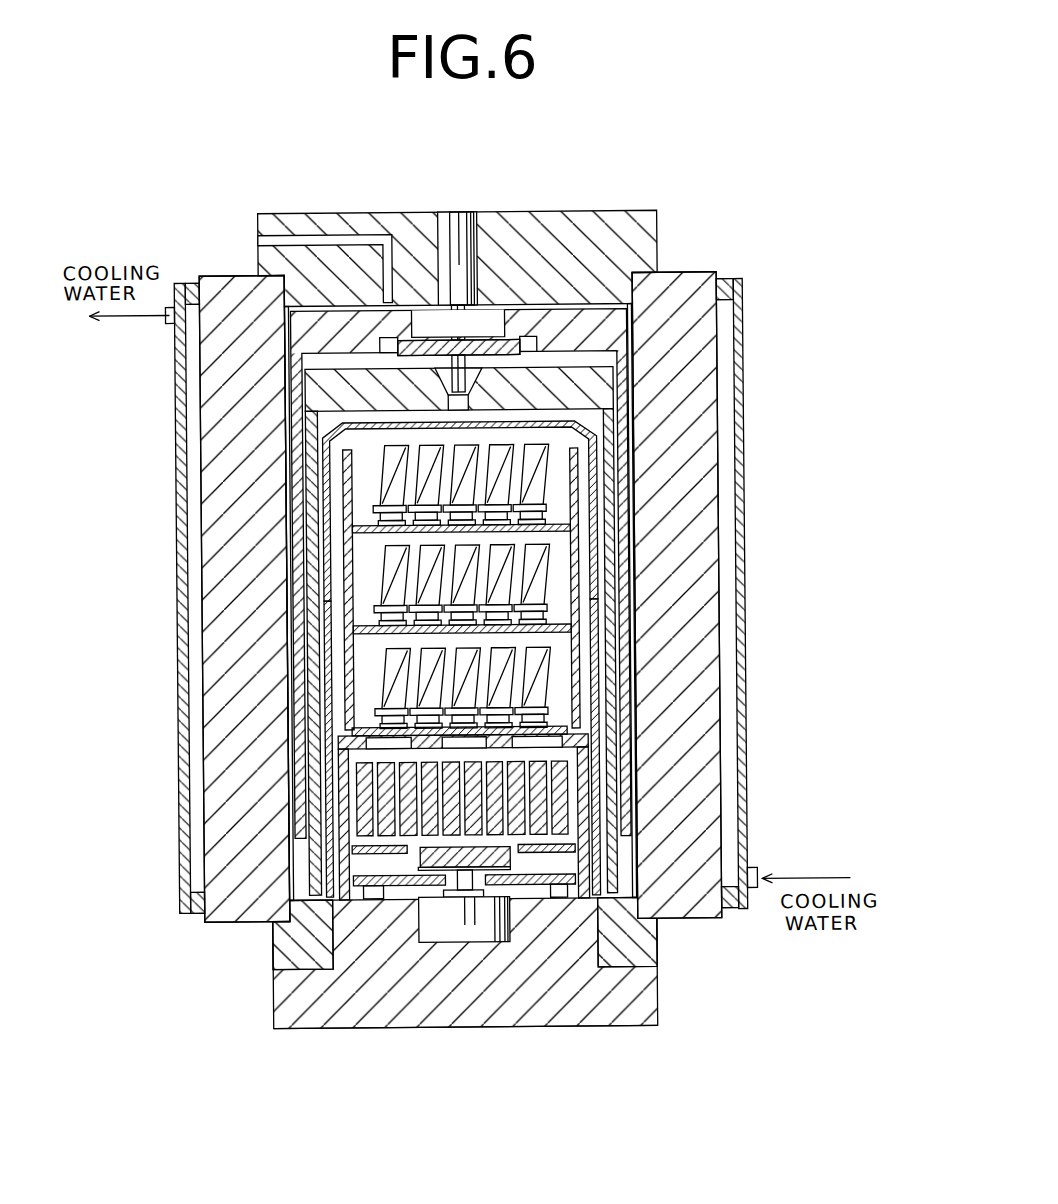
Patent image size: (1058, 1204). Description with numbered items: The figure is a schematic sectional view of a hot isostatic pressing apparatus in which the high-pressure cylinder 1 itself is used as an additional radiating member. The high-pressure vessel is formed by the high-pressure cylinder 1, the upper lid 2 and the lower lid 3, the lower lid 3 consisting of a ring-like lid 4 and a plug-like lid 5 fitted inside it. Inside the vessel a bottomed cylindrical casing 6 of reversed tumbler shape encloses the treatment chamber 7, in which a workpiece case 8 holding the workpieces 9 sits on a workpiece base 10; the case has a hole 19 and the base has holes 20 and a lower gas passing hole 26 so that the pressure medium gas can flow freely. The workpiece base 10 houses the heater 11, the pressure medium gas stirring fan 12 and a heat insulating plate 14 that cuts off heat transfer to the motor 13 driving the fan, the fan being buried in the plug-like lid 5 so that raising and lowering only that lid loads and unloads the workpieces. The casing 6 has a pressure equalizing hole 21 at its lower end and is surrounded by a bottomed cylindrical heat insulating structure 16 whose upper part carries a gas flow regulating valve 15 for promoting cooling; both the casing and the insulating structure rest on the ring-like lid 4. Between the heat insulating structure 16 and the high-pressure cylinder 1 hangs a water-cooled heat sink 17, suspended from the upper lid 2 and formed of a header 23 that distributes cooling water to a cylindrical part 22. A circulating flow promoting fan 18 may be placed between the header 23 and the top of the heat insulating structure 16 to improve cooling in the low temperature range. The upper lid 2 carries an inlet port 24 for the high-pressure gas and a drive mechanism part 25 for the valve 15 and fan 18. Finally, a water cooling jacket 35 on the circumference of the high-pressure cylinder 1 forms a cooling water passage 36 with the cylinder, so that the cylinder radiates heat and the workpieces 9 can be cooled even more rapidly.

The high-pressure cylinder 1 is at (507, 557).
The upper lid 2 is at (466, 235).
The lower lid 3 is at (665, 985).
The ring-like lid 4 is at (629, 958).
The plug-like lid 5 is at (624, 1011).
The bottomed cylindrical casing 6 is at (601, 508).
The treatment chamber 7 is at (459, 563).
The workpiece case 8 is at (580, 646).
The workpieces 9 is at (548, 573).
The workpiece base 10 is at (584, 738).
The heater 11 is at (563, 783).
The pressure medium gas stirring fan 12 is at (598, 863).
The motor 13 is at (414, 926).
The heat insulating plate 14 is at (520, 878).
The gas flow regulating valve 15 is at (624, 405).
The bottomed cylindrical heat insulating structure 16 is at (618, 463).
The heat sink 17 is at (548, 572).
The circulating flow promoting fan 18 is at (522, 344).
The hole 19 is at (373, 626).
The holes 20 is at (411, 845).
The pressure equalizing hole 21 is at (513, 860).
The cylindrical part 22 is at (597, 696).
The header 23 is at (636, 309).
The inlet port 24 is at (322, 240).
The drive mechanism part 25 is at (483, 236).
The gas passing hole 26 is at (341, 866).
The water cooling jacket 35 is at (746, 537).
The cooling water passage 36 is at (725, 602).